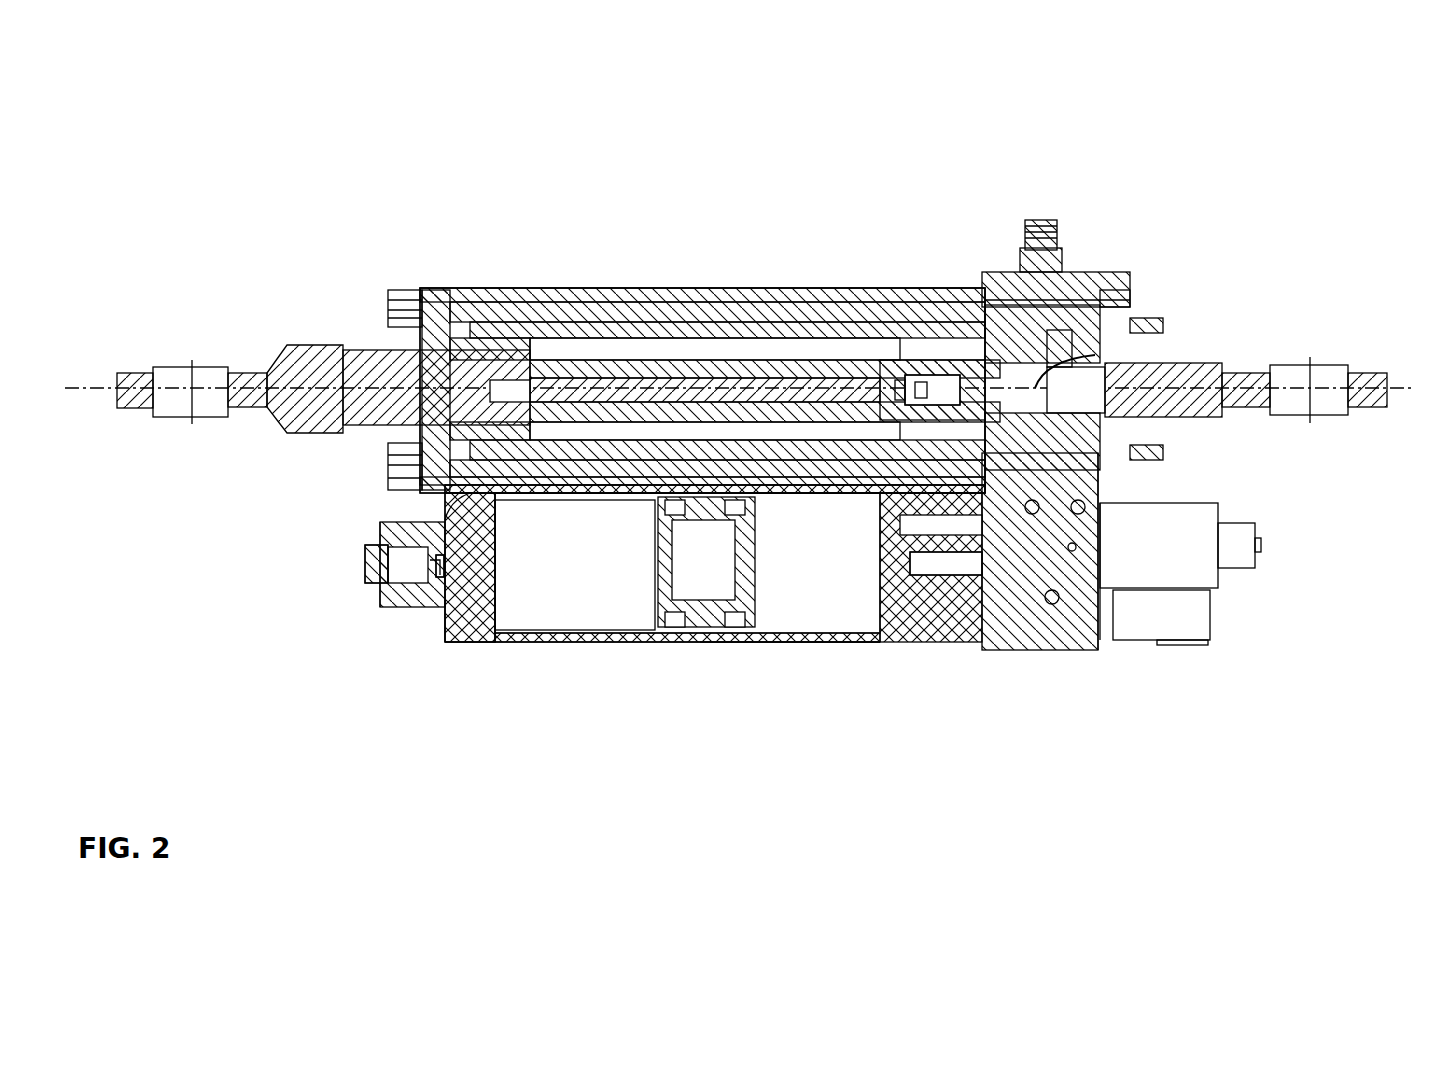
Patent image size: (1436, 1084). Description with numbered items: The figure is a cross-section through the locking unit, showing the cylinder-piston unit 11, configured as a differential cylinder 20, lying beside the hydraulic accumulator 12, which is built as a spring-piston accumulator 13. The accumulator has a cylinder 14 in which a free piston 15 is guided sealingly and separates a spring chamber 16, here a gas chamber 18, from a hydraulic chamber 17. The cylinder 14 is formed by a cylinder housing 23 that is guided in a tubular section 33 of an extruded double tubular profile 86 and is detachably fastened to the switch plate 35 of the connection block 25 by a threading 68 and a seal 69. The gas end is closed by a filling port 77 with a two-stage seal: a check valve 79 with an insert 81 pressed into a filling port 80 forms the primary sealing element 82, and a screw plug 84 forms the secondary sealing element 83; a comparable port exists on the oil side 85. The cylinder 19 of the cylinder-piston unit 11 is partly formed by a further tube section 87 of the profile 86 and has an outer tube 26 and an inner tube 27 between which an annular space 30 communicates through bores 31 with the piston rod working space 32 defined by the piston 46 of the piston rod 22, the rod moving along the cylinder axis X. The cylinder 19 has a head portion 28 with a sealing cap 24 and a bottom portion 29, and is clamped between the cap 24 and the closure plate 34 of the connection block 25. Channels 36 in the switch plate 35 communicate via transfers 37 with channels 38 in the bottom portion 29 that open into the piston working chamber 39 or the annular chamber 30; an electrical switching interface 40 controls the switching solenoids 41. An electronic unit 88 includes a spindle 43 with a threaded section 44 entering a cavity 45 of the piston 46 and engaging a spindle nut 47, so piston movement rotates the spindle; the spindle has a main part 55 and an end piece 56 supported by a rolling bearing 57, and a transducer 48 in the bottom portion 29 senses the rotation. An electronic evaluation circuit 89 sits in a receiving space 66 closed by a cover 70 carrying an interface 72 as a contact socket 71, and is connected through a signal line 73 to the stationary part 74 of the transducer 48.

The cylinder-piston unit 11 is at (350, 218).
The differential cylinder 20 is at (702, 390).
The hydraulic accumulator 12 is at (982, 682).
The spring-piston accumulator 13 is at (470, 567).
The cylinder 14 is at (572, 642).
The free piston 15 is at (690, 632).
The spring chamber 16 is at (530, 625).
The gas chamber 18 is at (715, 489).
The hydraulic chamber 17 is at (770, 600).
The cylinder 19 is at (655, 298).
The piston rod 22 is at (330, 378).
The cylinder housing 23 is at (480, 642).
The sealing cap 24 is at (425, 315).
The connection block 25 is at (1040, 660).
The outer tube 26 is at (650, 300).
The inner tube 27 is at (578, 333).
The head portion 28 is at (470, 325).
The bottom portion 29 is at (1072, 335).
The annular space 30 is at (600, 322).
The bores 31 is at (520, 330).
The piston rod working space 32 is at (565, 335).
The tubular section 33 is at (800, 645).
The closure plate 34 is at (975, 352).
The switch plate 35 is at (1090, 652).
The channels 36 is at (1080, 507).
The transfers 37 is at (1065, 440).
The channels 38 is at (905, 353).
The piston working chamber 39 is at (885, 378).
The electrical switching interface 40 is at (1205, 645).
The switching solenoids 41 is at (1242, 553).
The spindle 43 is at (712, 366).
The threaded section 44 is at (760, 332).
The cavity 45 is at (495, 394).
The piston 46 is at (820, 365).
The spindle nut 47 is at (848, 378).
The transducer 48 is at (978, 302).
The main part 55 is at (685, 380).
The end piece 56 is at (915, 400).
The rolling bearing 57 is at (900, 400).
The receiving space 66 is at (1115, 300).
The threading 68 is at (972, 588).
The seal 69 is at (945, 592).
The cover 70 is at (1107, 273).
The contact socket 71 is at (1046, 226).
The interface 72 is at (1040, 224).
The signal line 73 is at (1100, 352).
The stationary part 74 is at (1000, 395).
The filling port 77 is at (355, 597).
The check valve 79 is at (442, 568).
The filling port 80 is at (455, 545).
The insert 81 is at (445, 577).
The primary sealing element 82 is at (440, 566).
The secondary sealing element 83 is at (368, 548).
The screw plug 84 is at (376, 564).
The oil side 85 is at (1288, 500).
The extruded double tubular profile 86 is at (716, 282).
The tube section 87 is at (745, 320).
The electronic unit 88 is at (1130, 200).
The electronic evaluation circuit 89 is at (1118, 298).
The cylinder axis X is at (1410, 385).